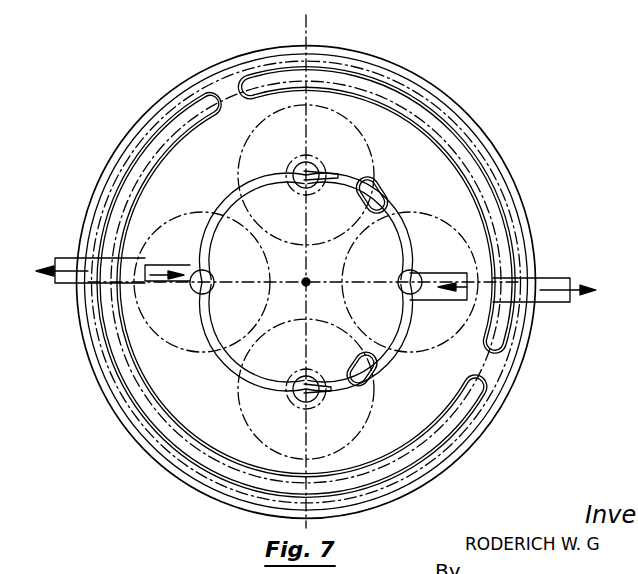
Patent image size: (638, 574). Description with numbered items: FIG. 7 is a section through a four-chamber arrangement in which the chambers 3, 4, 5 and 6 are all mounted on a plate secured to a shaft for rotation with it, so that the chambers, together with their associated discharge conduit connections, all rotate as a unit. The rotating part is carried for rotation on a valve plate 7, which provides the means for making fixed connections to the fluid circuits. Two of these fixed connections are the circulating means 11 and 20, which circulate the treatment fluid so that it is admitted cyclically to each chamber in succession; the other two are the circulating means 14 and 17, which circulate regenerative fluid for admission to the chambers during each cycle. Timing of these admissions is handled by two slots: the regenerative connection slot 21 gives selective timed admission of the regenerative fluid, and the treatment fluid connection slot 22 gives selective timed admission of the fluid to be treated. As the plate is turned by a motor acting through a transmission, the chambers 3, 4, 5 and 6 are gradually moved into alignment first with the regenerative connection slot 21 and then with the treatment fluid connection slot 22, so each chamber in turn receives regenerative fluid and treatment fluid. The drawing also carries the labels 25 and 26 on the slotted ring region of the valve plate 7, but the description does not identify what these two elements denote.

The chamber 3 is at (163, 245).
The chamber 4 is at (293, 118).
The chamber 5 is at (453, 245).
The chamber 6 is at (270, 423).
The valve plate 7 is at (447, 467).
The circulating means 11 is at (150, 285).
The circulating means 14 is at (450, 298).
The circulating means 17 is at (543, 298).
The circulating means 20 is at (73, 278).
The regenerative connection slot 21 is at (388, 203).
The treatment fluid connection slot 22 is at (257, 183).
The guide ring 25 is at (420, 108).
The arcuate slot 26 is at (130, 183).